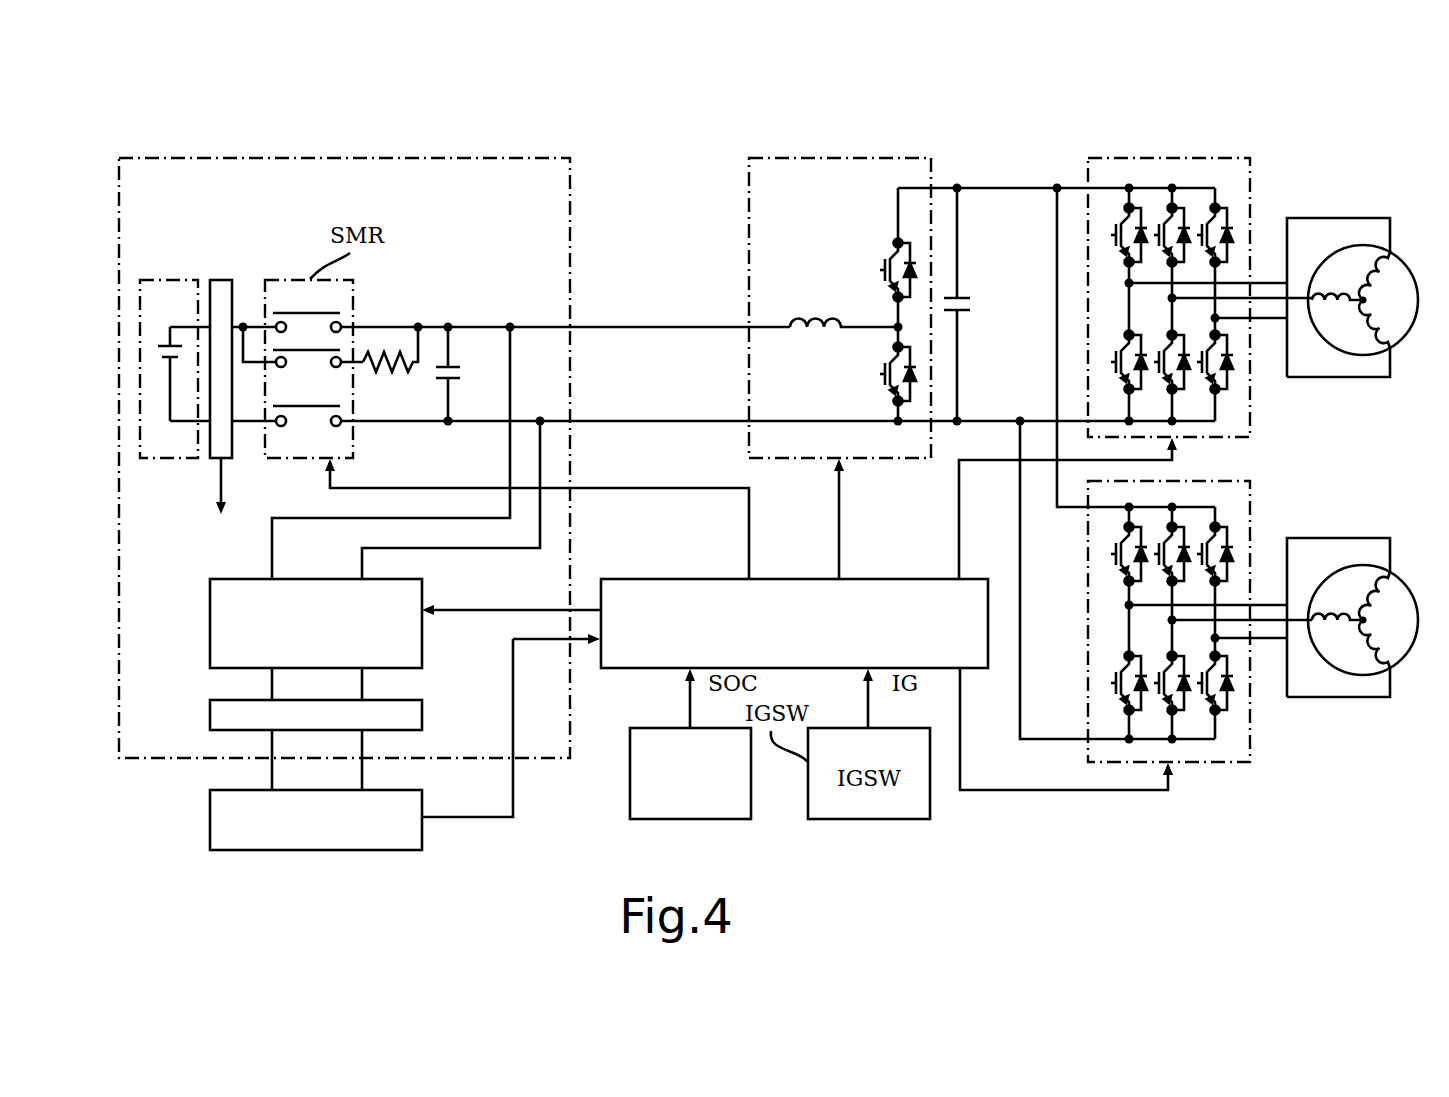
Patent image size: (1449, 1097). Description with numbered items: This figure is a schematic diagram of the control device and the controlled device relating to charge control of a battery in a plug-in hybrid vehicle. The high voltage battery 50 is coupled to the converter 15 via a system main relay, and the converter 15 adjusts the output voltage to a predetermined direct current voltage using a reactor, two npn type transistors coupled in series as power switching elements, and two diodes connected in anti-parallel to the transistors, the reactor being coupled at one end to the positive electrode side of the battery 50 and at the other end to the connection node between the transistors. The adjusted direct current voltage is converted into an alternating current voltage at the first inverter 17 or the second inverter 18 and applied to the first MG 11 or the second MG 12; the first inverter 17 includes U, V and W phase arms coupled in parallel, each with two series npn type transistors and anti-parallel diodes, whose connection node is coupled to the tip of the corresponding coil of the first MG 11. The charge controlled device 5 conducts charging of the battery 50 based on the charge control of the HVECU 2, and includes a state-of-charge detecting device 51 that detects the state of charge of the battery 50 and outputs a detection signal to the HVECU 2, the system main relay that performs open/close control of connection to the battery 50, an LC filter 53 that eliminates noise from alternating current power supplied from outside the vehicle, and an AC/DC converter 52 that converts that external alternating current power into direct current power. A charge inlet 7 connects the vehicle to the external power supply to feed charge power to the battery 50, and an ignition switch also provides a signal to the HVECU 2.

The hybrid vehicle ECU (HVECU) 2 is at (697, 578).
The charge controlled device 5 is at (396, 158).
The charge inlet 7 is at (210, 836).
The first MG 11 is at (1404, 343).
The second MG 12 is at (1404, 663).
The converter 15 is at (858, 157).
The first inverter 17 is at (1230, 157).
The second inverter 18 is at (1230, 480).
The high voltage battery 50 is at (172, 279).
The SOC detecting device 51 is at (224, 279).
The AC/DC converter 52 is at (210, 615).
The LC filter 53 is at (210, 706).